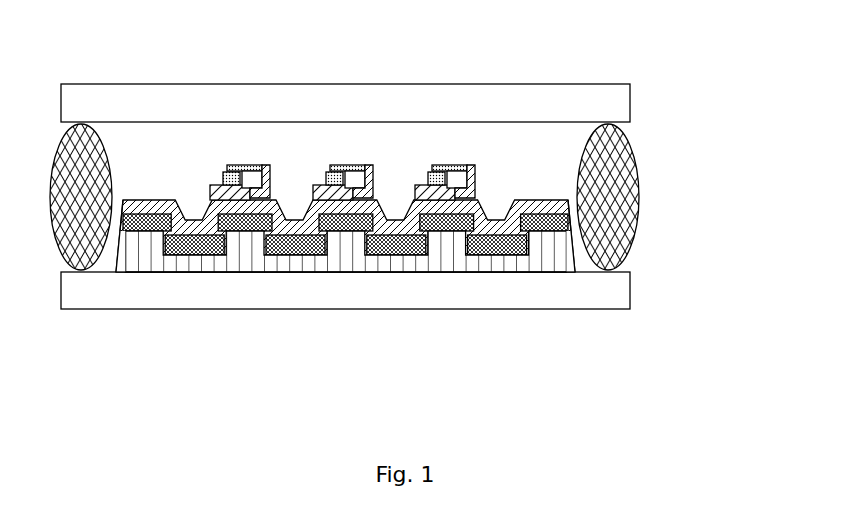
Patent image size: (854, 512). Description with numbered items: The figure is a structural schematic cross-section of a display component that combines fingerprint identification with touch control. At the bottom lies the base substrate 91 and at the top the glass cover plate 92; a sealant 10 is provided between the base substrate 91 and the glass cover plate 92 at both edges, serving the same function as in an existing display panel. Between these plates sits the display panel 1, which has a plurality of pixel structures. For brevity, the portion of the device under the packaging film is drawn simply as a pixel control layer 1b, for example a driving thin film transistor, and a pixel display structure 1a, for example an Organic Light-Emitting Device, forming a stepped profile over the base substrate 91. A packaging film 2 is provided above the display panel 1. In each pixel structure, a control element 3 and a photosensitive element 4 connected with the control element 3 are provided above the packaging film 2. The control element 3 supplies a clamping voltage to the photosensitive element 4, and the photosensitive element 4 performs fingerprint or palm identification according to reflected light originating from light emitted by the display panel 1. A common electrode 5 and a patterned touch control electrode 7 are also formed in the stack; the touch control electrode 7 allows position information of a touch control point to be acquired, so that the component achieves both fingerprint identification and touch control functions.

The display panel 1 is at (345, 315).
The pixel display structure 1a is at (313, 257).
The pixel control layer 1b is at (247, 257).
The packaging film 2 is at (413, 260).
The control element 3 is at (218, 186).
The photosensitive element 4 is at (232, 177).
The common electrode 5 is at (272, 192).
The touch control electrode 7 is at (250, 168).
The sealant 10 is at (605, 197).
The base substrate 91 is at (613, 295).
The glass cover plate 92 is at (607, 102).